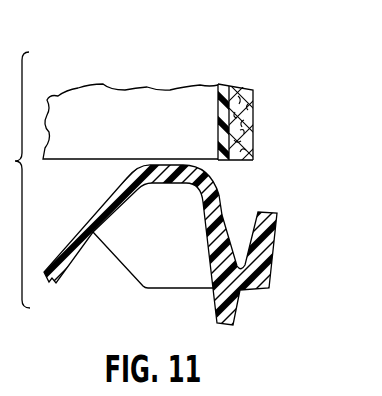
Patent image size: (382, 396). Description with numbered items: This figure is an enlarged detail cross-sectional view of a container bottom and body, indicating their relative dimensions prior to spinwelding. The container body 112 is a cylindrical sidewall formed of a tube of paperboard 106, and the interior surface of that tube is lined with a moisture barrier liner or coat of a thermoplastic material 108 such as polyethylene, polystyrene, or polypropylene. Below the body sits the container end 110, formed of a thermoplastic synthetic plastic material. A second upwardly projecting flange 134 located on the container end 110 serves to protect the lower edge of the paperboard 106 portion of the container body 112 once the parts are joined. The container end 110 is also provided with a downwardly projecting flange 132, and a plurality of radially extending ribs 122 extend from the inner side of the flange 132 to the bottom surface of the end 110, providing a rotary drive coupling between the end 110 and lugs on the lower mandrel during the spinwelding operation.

The paperboard 106 is at (252, 91).
The thermoplastic material 108 is at (231, 118).
The container end 110 is at (72, 266).
The container body 112 is at (173, 86).
The radially extending ribs 122 is at (133, 272).
The downwardly projecting flange 132 is at (240, 313).
The second upwardly projecting flange 134 is at (278, 237).